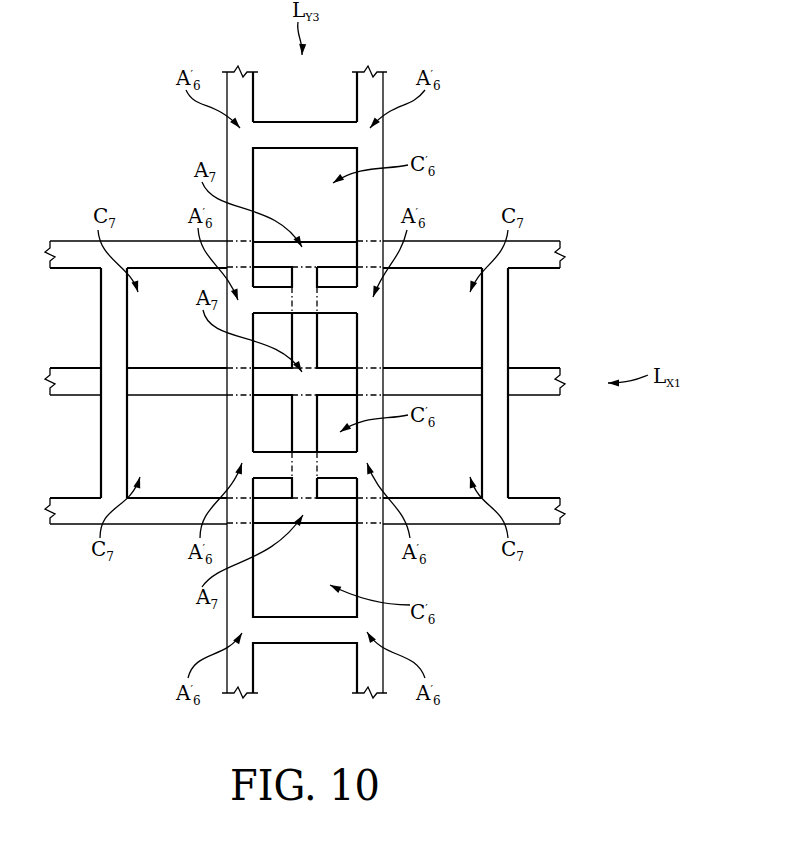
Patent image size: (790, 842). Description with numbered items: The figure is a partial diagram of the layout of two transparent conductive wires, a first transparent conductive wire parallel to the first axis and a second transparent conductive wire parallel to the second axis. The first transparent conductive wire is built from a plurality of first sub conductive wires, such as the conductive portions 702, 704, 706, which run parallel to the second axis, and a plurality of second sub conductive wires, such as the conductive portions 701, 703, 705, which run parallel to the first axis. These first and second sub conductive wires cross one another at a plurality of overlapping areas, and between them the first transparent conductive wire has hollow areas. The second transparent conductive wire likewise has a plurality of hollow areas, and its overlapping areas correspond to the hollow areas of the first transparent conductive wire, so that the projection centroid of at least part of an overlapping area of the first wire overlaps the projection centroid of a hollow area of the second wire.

The conductive portion 701 is at (442, 257).
The conductive portion 702 is at (384, 322).
The conductive portion 703 is at (442, 385).
The conductive portion 704 is at (115, 319).
The conductive portion 705 is at (442, 512).
The conductive portion 706 is at (495, 318).